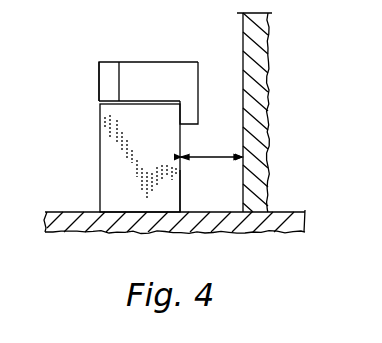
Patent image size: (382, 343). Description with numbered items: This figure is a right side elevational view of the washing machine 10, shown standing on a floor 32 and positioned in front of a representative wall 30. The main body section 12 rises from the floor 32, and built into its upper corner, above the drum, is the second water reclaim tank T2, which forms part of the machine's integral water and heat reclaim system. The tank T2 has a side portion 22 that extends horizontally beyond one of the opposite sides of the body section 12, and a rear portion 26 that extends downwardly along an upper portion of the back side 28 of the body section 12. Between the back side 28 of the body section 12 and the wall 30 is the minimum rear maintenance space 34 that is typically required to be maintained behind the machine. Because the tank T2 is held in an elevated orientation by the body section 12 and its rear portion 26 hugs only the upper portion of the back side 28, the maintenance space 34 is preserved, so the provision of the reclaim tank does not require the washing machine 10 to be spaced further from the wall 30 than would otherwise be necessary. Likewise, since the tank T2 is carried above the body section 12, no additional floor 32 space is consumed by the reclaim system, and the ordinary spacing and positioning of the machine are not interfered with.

The washing machine 10 is at (90, 54).
The side portion 22 is at (153, 72).
The rear portion 26 is at (188, 96).
The second water reclaim tank T2 is at (98, 78).
The body section 12 is at (100, 127).
The back side 28 is at (180, 192).
The rear maintenance space 34 is at (228, 135).
The wall 30 is at (243, 34).
The floor 32 is at (72, 212).